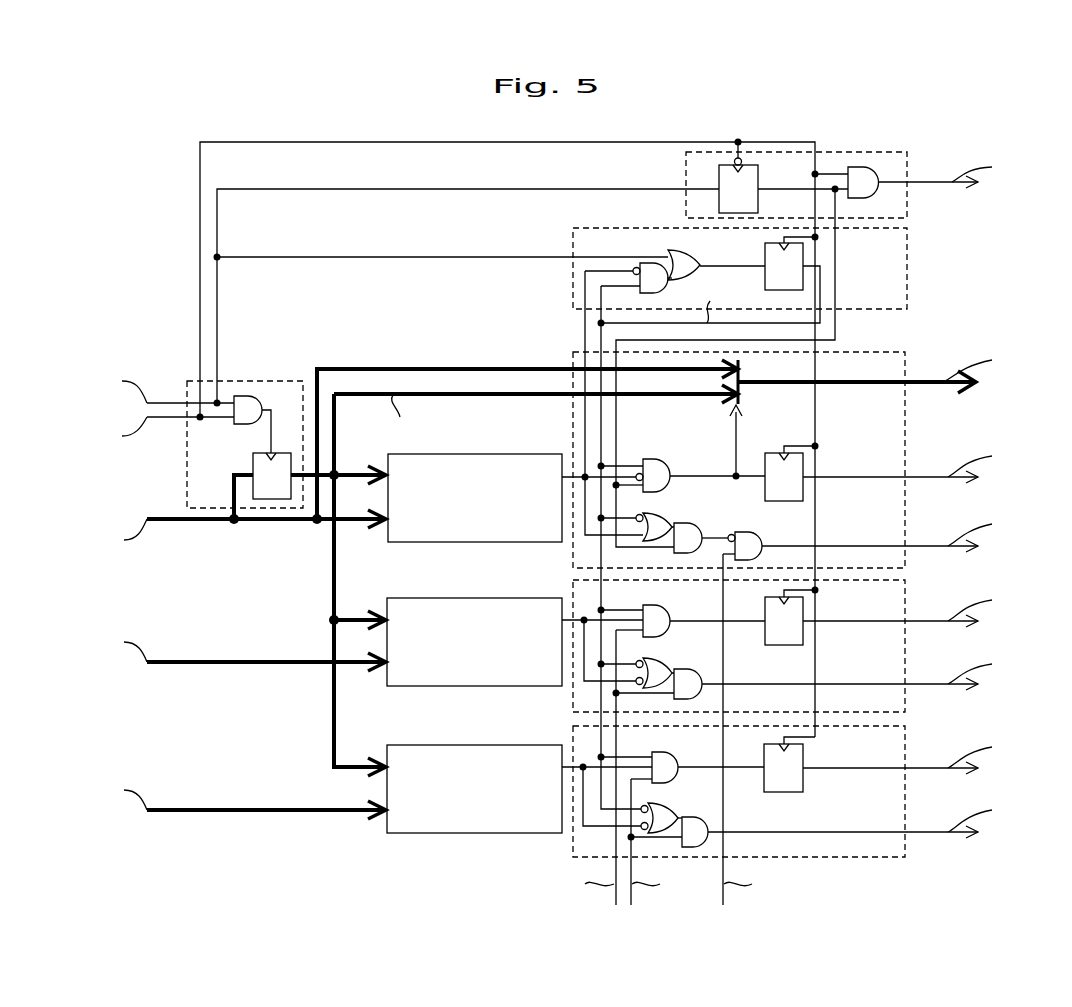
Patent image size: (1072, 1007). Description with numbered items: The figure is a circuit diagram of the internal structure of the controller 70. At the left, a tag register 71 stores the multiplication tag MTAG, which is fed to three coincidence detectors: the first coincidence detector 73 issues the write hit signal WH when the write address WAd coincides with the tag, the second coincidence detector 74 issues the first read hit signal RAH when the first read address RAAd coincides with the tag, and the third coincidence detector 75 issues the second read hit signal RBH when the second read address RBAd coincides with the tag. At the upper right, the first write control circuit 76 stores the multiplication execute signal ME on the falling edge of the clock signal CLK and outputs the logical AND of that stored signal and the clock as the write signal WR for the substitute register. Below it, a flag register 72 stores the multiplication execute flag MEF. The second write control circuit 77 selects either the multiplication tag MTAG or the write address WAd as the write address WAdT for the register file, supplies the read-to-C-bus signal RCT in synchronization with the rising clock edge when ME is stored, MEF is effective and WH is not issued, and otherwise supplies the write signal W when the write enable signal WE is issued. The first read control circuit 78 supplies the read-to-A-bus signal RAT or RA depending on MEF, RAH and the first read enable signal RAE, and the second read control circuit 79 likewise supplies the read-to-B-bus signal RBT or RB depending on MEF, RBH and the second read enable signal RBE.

The controller 70 is at (102, 175).
The tag register 71 is at (258, 381).
The flag register 72 is at (907, 283).
The first coincidence detector 73 is at (475, 543).
The second coincidence detector 74 is at (475, 687).
The third coincidence detector 75 is at (475, 834).
The first write control circuit 76 is at (907, 197).
The second write control circuit 77 is at (907, 555).
The first read control circuit 78 is at (907, 700).
The second read control circuit 79 is at (907, 852).